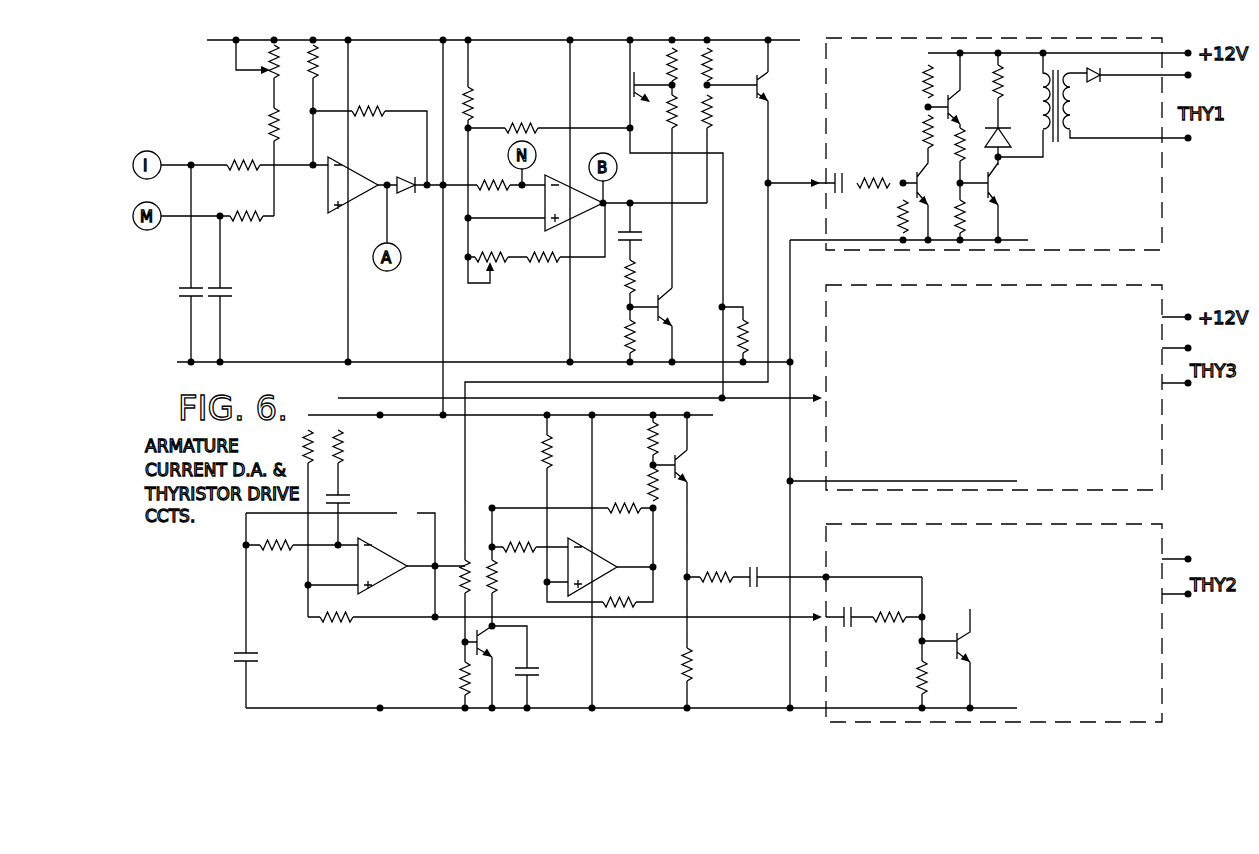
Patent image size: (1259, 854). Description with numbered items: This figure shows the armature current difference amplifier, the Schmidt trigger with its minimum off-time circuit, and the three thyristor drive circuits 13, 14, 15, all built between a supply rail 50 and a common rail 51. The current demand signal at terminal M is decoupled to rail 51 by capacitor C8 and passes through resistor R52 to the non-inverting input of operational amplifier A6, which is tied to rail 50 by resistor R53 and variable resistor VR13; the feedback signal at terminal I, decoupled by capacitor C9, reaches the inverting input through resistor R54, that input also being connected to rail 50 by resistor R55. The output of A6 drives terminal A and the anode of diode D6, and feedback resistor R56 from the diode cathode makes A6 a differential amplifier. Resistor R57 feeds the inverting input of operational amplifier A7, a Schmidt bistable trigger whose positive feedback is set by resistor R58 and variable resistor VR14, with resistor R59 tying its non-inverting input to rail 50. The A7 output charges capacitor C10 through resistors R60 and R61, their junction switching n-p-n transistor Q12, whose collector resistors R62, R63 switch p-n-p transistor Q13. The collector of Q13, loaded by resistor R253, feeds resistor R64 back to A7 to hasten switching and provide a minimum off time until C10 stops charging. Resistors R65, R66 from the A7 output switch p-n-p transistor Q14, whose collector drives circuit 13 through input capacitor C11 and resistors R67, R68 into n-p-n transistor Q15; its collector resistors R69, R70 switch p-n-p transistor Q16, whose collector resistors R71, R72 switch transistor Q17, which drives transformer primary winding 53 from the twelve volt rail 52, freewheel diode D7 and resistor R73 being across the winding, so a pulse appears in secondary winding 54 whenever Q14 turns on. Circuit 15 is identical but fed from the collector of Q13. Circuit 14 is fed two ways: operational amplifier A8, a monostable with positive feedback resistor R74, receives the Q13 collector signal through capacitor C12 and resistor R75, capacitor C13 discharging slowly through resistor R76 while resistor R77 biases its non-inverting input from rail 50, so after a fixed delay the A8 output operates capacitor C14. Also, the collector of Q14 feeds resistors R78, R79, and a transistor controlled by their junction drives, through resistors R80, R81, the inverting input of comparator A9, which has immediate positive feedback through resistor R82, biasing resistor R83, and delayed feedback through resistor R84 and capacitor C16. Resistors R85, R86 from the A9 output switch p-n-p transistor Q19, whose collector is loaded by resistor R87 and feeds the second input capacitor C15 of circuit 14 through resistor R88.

The thyristor drive circuit 13 is at (1150, 244).
The thyristor drive circuit 14 is at (1160, 718).
The thyristor drive circuit 15 is at (1160, 482).
The rail 50 is at (512, 42).
The rail 51 is at (416, 362).
The 12 V rail 52 is at (1098, 66).
The transformer primary winding 53 is at (1050, 138).
The secondary winding 54 is at (1080, 138).
The variable resistor VR13 is at (250, 72).
The variable resistor VR14 is at (497, 245).
The resistor R52 is at (243, 213).
The resistor R53 is at (270, 137).
The resistor R54 is at (244, 158).
The resistor R55 is at (328, 73).
The feedback resistor R56 is at (360, 103).
The resistor R57 is at (480, 178).
The resistor R58 is at (543, 270).
The resistor R59 is at (476, 110).
The resistor R60 is at (626, 264).
The resistor R61 is at (622, 347).
The resistor R62 is at (670, 124).
The resistor R63 is at (670, 74).
The resistor R64 is at (508, 124).
The resistor R65 is at (712, 124).
The resistor R66 is at (712, 72).
The resistor R67 is at (868, 178).
The resistor R68 is at (898, 208).
The resistor R69 is at (920, 136).
The resistor R70 is at (922, 90).
The resistor R71 is at (951, 164).
The resistor R72 is at (965, 210).
The resistor R73 is at (990, 92).
The positive feedback resistor R74 is at (332, 624).
The resistor R75 is at (344, 452).
The resistor R76 is at (272, 552).
The resistor R77 is at (306, 456).
The resistor R78 is at (460, 568).
The resistor R79 is at (460, 684).
The resistor R80 is at (500, 580).
The resistor R81 is at (512, 542).
The resistor R82 is at (606, 600).
The resistor R83 is at (542, 450).
The resistor R84 is at (618, 504).
The resistor R85 is at (650, 482).
The resistor R86 is at (648, 426).
The resistor R87 is at (694, 672).
The resistor R88 is at (710, 572).
The resistor R253 is at (750, 322).
The capacitor C8 is at (232, 288).
The capacitor C9 is at (178, 288).
The capacitor C10 is at (638, 234).
The input capacitor C11 is at (838, 172).
The capacitor C12 is at (344, 498).
The capacitor C13 is at (254, 658).
The capacitor C14 is at (845, 610).
The second input capacitor C15 is at (754, 568).
The capacitor C16 is at (540, 674).
The diode D6 is at (410, 170).
The freewheel diode D7 is at (1014, 146).
The operational amplifier A6 is at (330, 182).
The operational amplifier A7 is at (596, 212).
The operational amplifier A8 is at (388, 574).
The operational amplifier A9 is at (600, 552).
The n-p-n transistor Q12 is at (664, 308).
The p-n-p transistor Q13 is at (630, 82).
The p-n-p transistor Q14 is at (762, 84).
The n-p-n transistor Q15 is at (931, 194).
The p-n-p transistor Q16 is at (955, 100).
The transistor Q17 is at (996, 184).
The p-n-p transistor Q19 is at (683, 470).